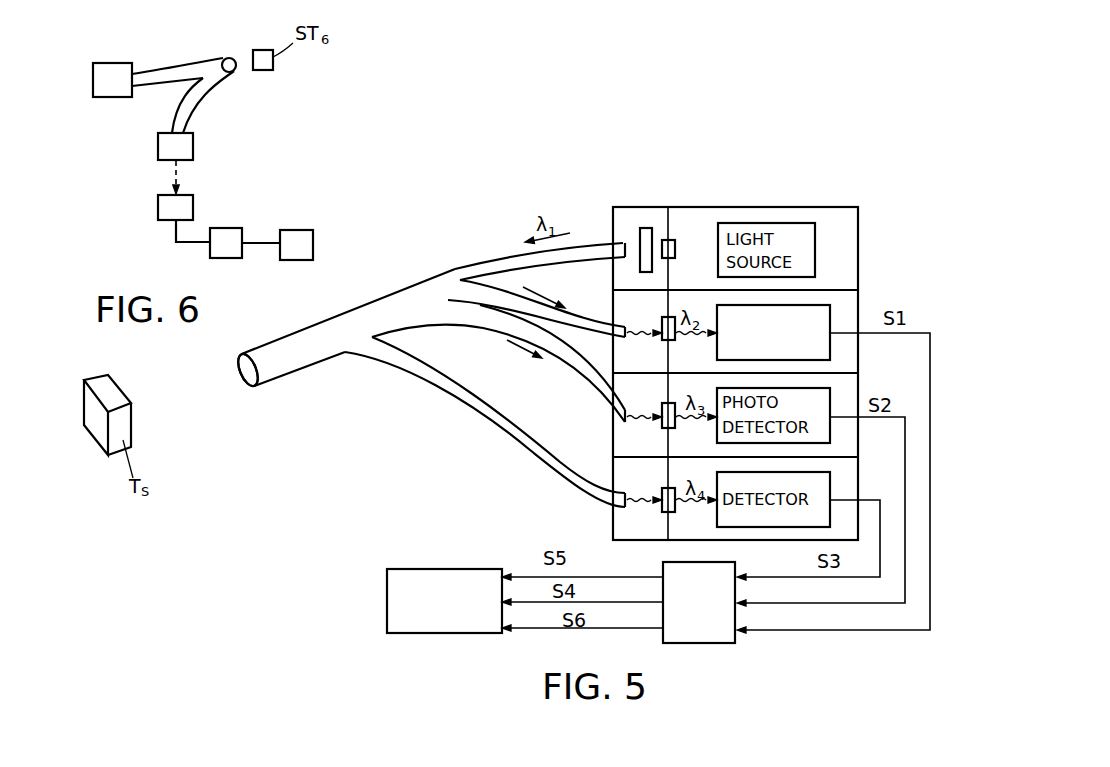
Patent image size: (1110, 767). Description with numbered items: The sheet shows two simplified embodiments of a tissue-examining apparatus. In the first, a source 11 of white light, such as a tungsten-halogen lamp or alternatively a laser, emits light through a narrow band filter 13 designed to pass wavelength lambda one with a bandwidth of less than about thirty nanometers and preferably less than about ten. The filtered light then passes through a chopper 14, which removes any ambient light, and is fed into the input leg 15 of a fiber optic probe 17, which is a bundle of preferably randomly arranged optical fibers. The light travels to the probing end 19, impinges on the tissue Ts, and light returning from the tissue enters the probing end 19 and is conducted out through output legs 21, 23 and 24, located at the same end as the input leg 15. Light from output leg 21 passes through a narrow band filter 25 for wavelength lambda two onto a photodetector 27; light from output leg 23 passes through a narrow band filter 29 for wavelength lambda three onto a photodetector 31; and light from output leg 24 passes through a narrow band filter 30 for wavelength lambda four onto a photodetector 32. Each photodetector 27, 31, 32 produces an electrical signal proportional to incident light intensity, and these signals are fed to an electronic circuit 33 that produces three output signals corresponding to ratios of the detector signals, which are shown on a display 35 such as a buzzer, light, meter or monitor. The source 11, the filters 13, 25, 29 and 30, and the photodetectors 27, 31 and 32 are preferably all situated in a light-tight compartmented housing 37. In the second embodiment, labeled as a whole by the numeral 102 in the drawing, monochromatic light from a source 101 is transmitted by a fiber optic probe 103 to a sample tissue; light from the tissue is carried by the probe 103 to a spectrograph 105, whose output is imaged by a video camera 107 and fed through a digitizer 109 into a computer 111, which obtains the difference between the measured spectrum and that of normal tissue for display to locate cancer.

In FIG. 5, the source of white light 11 is at (805, 223).
In FIG. 5, the narrow band filter 13 is at (676, 250).
In FIG. 5, the chopper 14 is at (641, 228).
In FIG. 5, the input leg 15 is at (597, 243).
In FIG. 5, the fiber optic probe 17 is at (331, 356).
In FIG. 5, the probing end 19 is at (254, 380).
In FIG. 5, the output leg 21 is at (536, 308).
In FIG. 5, the output leg 23 is at (498, 363).
In FIG. 5, the output leg 24 is at (507, 415).
In FIG. 5, the narrow band filter 25 is at (660, 337).
In FIG. 5, the photodetector 27 is at (718, 354).
In FIG. 5, the narrow band filter 29 is at (661, 426).
In FIG. 5, the narrow band filter 30 is at (661, 506).
In FIG. 5, the photodetector 31 is at (684, 373).
In FIG. 5, the photodetector 32 is at (821, 511).
In FIG. 5, the electronic circuit 33 is at (663, 567).
In FIG. 5, the display 35 is at (430, 569).
In FIG. 5, the light-tight compartmented housing 37 is at (780, 207).
In FIG. 6, the source 101 is at (113, 97).
In FIG. 6, the measuring system 102 is at (100, 255).
In FIG. 6, the fiber optic probe 103 is at (177, 65).
In FIG. 6, the spectrograph 105 is at (158, 152).
In FIG. 6, the video camera 107 is at (193, 203).
In FIG. 6, the digitizer 109 is at (210, 250).
In FIG. 6, the computer 111 is at (307, 230).